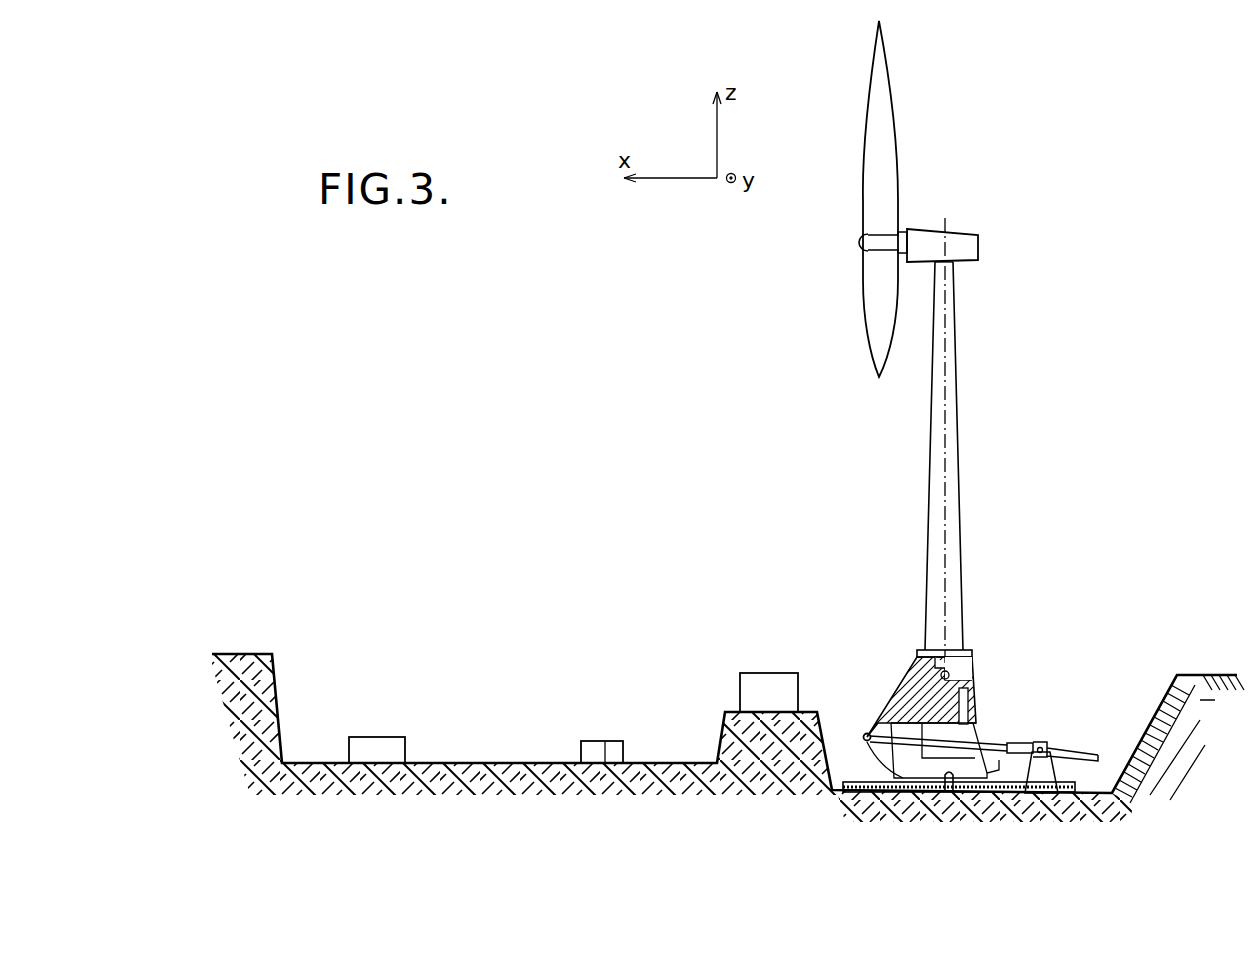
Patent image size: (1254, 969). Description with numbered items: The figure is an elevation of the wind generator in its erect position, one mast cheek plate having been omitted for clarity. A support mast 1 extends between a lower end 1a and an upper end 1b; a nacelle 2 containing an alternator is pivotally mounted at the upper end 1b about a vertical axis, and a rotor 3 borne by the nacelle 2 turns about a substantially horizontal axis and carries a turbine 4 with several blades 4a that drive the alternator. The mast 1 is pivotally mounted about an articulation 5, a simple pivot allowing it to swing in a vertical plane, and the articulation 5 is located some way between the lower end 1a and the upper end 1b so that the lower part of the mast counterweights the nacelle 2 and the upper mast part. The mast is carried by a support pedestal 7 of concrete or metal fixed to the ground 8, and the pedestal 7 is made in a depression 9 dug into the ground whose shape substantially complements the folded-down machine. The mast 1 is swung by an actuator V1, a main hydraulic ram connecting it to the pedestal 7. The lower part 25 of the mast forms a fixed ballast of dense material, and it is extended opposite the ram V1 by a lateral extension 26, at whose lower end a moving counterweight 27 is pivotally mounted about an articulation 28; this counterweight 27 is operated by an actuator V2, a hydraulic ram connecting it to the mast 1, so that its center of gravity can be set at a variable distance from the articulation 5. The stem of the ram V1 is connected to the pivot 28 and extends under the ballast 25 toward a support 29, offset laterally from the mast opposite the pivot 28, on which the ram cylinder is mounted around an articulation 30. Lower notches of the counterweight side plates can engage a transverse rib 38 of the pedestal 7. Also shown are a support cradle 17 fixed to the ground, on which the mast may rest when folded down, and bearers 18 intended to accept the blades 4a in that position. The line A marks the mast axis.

The support mast 1 is at (980, 449).
The lower end 1a is at (859, 717).
The upper end 1b is at (950, 270).
The nacelle 2 is at (954, 250).
The rotor 3 is at (882, 243).
The turbine 4 is at (901, 199).
The blades 4a is at (873, 297).
The articulation 5 is at (963, 675).
The support pedestal 7 is at (1040, 785).
The ground 8 is at (1200, 688).
The depression 9 is at (1128, 694).
The support cradle 17 is at (767, 690).
The bearers 18 is at (592, 753).
The lower part of the mast 25 is at (972, 655).
The lateral extension 26 is at (883, 713).
The moving counterweight 27 is at (907, 728).
The articulation 28 is at (865, 738).
The support 29 is at (1055, 790).
The articulation 30 is at (1048, 752).
The transverse rib 38 is at (948, 792).
The tower axis A is at (945, 503).
The actuator V1 is at (1070, 771).
The actuator V2 is at (986, 714).